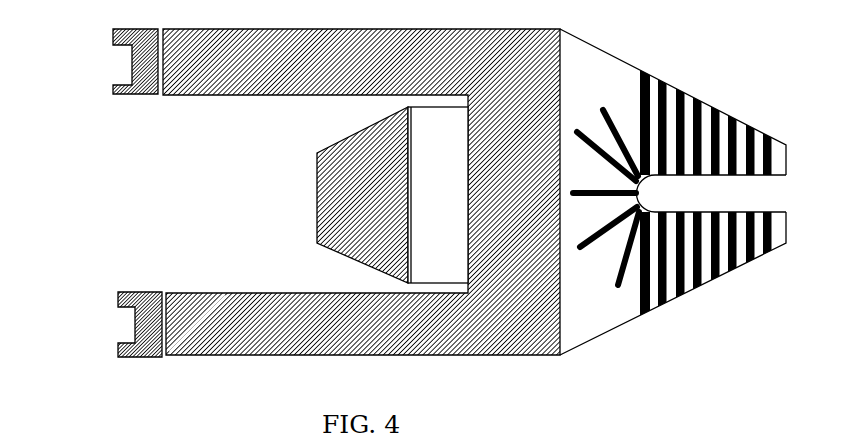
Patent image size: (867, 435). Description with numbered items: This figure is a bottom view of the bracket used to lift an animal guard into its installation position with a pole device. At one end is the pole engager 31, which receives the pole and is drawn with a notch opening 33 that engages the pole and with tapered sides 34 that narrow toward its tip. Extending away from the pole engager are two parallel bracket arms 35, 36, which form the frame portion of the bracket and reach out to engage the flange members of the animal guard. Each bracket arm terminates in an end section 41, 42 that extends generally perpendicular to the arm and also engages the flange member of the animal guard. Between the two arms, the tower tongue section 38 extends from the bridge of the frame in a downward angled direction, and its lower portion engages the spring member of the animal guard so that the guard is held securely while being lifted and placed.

The pole engager 31 is at (673, 192).
The notch opening 33 is at (713, 200).
The tapered sides 34 is at (645, 63).
The bracket arm 35 is at (168, 97).
The bracket arm 36 is at (319, 356).
The tower tongue section 38 is at (317, 223).
The end section 41 is at (112, 98).
The end section 42 is at (120, 357).